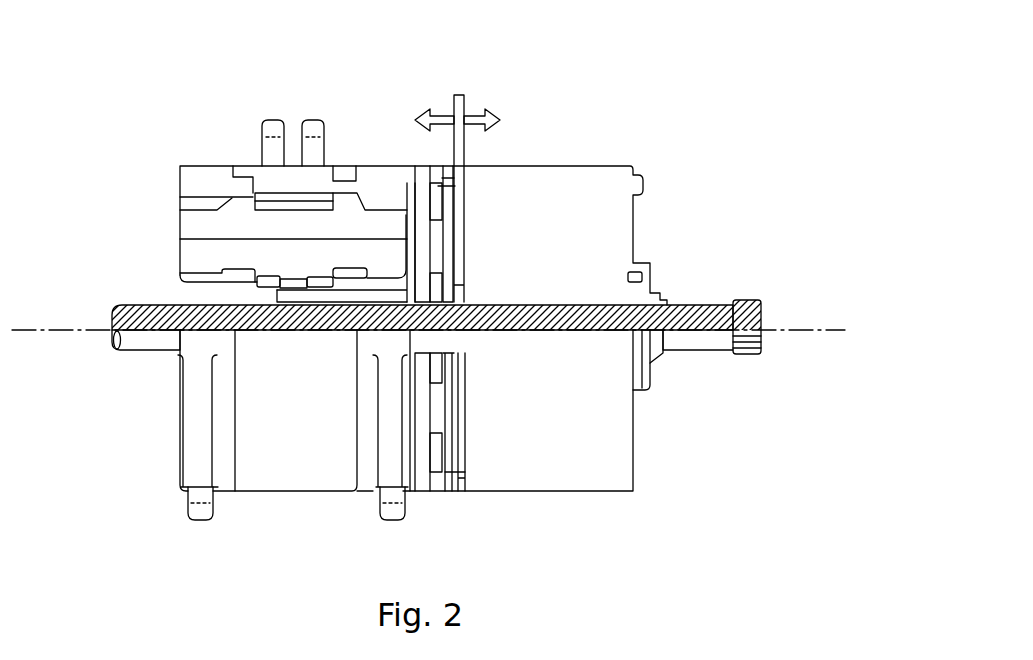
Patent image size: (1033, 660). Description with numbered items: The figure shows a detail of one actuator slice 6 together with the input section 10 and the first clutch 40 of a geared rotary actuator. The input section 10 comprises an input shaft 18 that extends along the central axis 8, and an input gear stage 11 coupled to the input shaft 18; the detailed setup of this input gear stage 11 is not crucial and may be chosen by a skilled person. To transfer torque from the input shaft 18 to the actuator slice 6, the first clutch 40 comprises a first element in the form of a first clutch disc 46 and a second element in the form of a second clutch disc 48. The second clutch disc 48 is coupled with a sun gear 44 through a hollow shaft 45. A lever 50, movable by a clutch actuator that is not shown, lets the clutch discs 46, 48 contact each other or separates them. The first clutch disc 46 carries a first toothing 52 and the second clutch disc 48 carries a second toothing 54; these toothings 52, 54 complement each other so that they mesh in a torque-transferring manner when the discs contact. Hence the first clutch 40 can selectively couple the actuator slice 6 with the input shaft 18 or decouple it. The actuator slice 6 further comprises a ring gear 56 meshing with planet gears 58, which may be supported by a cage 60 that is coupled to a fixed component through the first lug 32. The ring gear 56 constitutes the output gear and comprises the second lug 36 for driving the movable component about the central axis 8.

The actuator slice 6 is at (297, 480).
The central axis 8 is at (810, 330).
The input section 10 is at (665, 143).
The input gear stage 11 is at (613, 451).
The input shaft 18 is at (692, 305).
The first lug 32 is at (200, 517).
The second lug 36 is at (271, 133).
The first clutch 40 is at (469, 498).
The sun gear 44 is at (290, 277).
The hollow shaft 45 is at (297, 299).
The first clutch disc 46 is at (447, 195).
The second clutch disc 48 is at (412, 164).
The lever 50 is at (462, 102).
The first toothing 52 is at (436, 174).
The second toothing 54 is at (445, 184).
The ring gear 56 is at (270, 194).
The planet gears 58 is at (263, 217).
The cage 60 is at (383, 180).